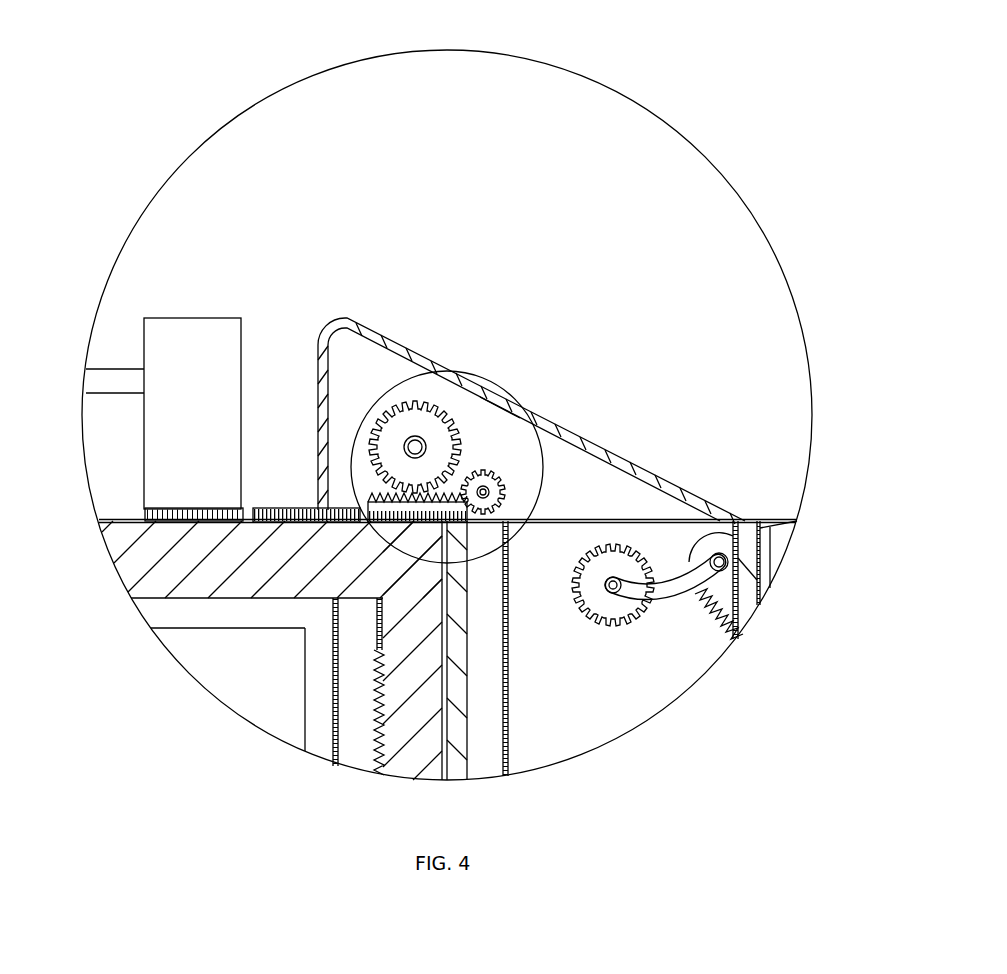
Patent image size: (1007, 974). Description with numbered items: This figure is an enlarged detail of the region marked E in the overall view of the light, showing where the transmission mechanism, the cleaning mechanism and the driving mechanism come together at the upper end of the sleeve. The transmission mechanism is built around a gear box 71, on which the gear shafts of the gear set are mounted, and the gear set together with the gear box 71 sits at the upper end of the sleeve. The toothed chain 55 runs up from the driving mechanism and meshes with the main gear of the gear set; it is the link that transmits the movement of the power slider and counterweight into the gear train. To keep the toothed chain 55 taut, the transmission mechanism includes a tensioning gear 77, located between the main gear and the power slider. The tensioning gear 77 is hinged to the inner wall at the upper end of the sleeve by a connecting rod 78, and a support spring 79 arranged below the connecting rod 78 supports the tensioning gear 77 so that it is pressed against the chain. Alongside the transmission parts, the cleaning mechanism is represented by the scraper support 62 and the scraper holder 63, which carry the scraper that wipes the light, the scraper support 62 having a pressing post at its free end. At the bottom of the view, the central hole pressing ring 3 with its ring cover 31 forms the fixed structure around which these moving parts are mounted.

The gear box 71 is at (392, 338).
The scraper holder 63 is at (210, 333).
The scraper support 62 is at (113, 378).
The region E is at (498, 386).
The ring cover 31 is at (247, 558).
The central hole pressing ring 3 is at (383, 692).
The toothed chain 55 is at (508, 673).
The tensioning gear 77 is at (626, 625).
The connecting rod 78 is at (676, 594).
The support spring 79 is at (733, 613).